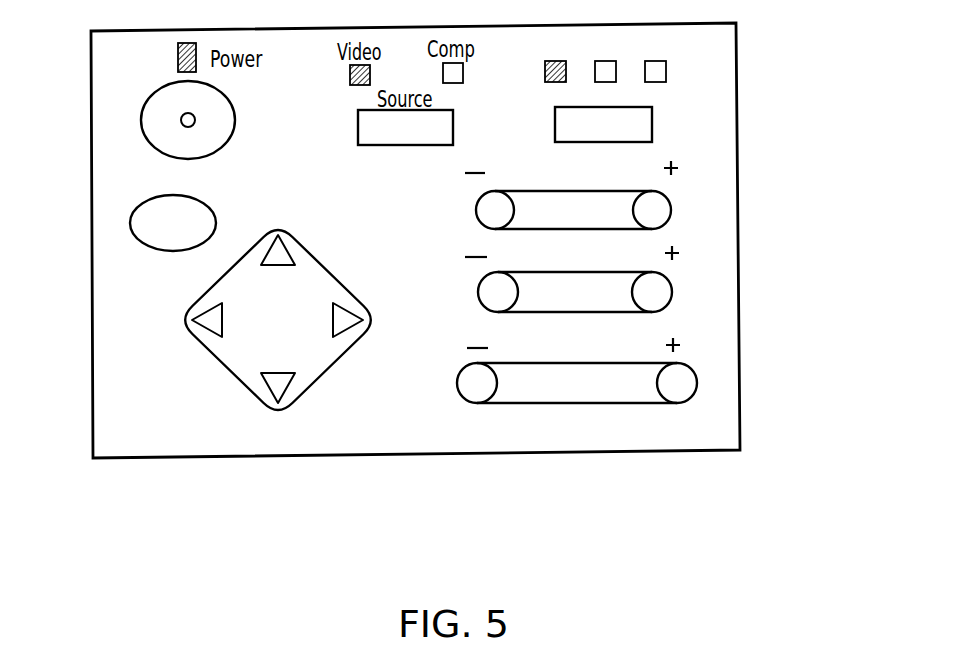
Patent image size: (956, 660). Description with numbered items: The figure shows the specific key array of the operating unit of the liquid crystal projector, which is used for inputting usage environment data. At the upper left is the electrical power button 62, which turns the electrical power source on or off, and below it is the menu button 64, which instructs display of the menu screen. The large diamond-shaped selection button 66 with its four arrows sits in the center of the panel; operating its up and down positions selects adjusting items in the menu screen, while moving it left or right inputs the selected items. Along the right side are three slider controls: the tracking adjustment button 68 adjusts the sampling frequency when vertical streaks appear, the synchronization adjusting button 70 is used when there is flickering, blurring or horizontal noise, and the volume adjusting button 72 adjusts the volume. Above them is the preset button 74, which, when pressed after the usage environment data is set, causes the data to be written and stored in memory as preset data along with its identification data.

The electrical power button 62 is at (148, 113).
The menu button 64 is at (150, 230).
The selection button 66 is at (320, 382).
The tracking adjustment button 68 is at (643, 207).
The synchronization adjusting button 70 is at (646, 294).
The volume adjusting button 72 is at (680, 376).
The preset button 74 is at (643, 122).